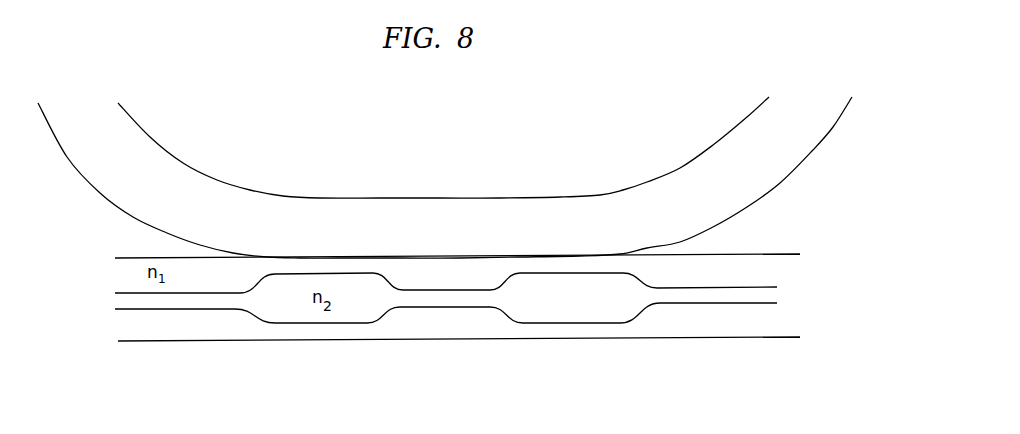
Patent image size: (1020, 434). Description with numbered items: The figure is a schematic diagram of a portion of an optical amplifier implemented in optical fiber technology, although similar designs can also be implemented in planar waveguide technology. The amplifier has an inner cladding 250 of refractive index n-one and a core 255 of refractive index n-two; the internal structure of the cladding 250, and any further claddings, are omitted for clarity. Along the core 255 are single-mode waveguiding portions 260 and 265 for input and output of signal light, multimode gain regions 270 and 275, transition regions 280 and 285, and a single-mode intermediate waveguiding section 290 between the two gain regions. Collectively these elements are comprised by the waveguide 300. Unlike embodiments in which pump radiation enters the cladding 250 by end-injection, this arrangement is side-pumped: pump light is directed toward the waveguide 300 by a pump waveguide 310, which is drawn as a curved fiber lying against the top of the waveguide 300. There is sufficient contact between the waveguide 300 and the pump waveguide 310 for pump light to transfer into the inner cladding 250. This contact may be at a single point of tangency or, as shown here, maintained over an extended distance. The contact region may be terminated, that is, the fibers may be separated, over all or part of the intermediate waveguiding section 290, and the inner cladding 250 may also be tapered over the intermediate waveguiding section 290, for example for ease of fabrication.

The inner cladding 250 is at (178, 334).
The core 255 is at (112, 306).
The single-mode waveguiding portion 260 is at (118, 347).
The single-mode waveguiding portion 265 is at (777, 347).
The multimode gain region 270 is at (288, 347).
The multimode gain region 275 is at (607, 347).
The transition region 280 is at (360, 347).
The transition region 285 is at (537, 347).
The single-mode intermediate waveguiding section 290 is at (482, 247).
The waveguide 300 is at (778, 254).
The pump waveguide 310 is at (137, 215).